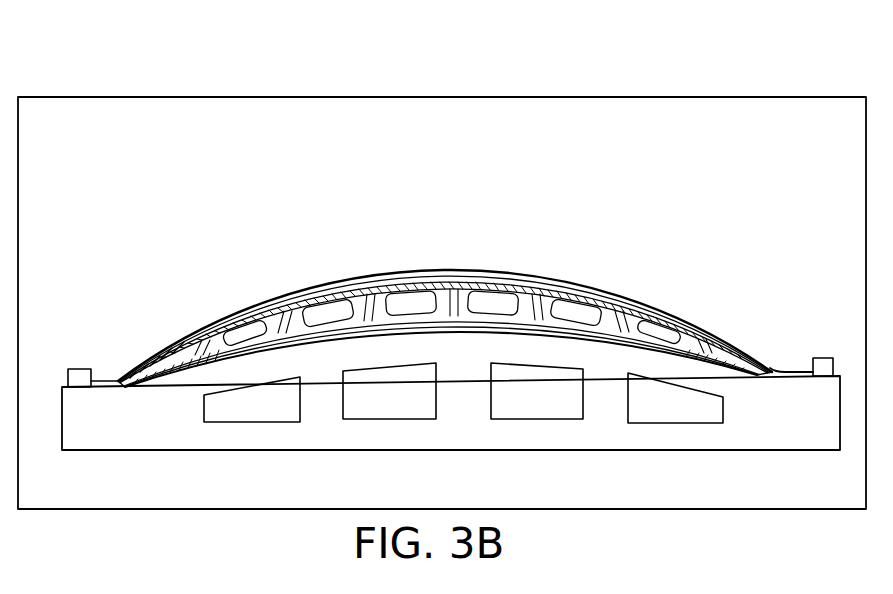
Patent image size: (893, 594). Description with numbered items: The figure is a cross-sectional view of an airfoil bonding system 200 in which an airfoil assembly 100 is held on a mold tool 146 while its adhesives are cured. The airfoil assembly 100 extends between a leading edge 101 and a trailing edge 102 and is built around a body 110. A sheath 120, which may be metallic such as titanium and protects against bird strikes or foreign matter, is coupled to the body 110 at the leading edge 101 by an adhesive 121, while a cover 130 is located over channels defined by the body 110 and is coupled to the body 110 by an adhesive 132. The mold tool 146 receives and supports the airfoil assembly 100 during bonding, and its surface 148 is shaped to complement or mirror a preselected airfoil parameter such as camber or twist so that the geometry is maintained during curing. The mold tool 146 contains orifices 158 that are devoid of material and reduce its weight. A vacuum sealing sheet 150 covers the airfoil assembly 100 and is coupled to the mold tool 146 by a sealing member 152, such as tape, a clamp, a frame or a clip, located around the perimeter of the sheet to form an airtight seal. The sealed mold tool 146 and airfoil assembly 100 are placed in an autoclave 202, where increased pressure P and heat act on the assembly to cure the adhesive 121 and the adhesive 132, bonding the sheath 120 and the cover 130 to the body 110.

The autoclave 202 is at (150, 97).
The airfoil bonding system 200 is at (165, 212).
The airfoil assembly 100 is at (445, 321).
The leading edge 101 is at (185, 386).
The trailing edge 102 is at (752, 380).
The body 110 is at (527, 305).
The sheath 120 is at (167, 352).
The adhesive 121 is at (183, 338).
The cover 130 is at (400, 283).
The adhesive 132 is at (440, 300).
The mold tool 146 is at (473, 439).
The surface 148 is at (330, 290).
The vacuum sealing sheet 150 is at (757, 368).
The sealing member 152 is at (78, 372).
The orifices 158 is at (537, 412).
The pressure P is at (130, 354).